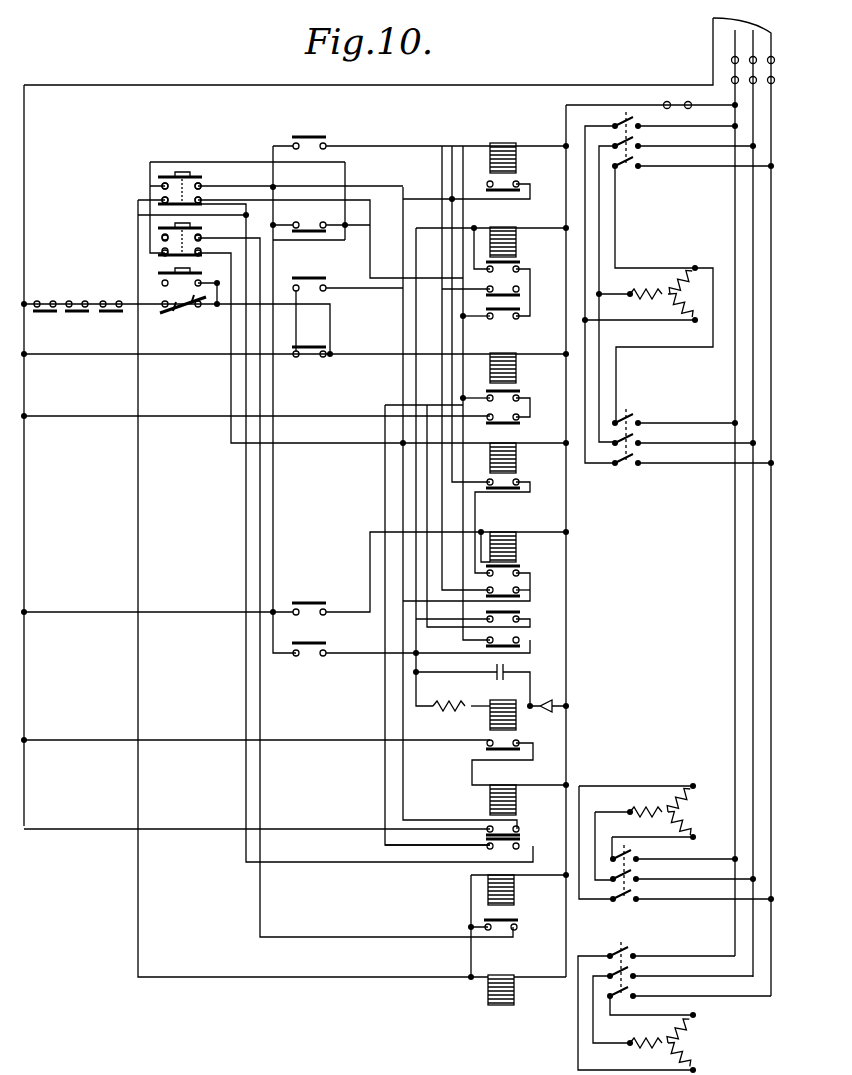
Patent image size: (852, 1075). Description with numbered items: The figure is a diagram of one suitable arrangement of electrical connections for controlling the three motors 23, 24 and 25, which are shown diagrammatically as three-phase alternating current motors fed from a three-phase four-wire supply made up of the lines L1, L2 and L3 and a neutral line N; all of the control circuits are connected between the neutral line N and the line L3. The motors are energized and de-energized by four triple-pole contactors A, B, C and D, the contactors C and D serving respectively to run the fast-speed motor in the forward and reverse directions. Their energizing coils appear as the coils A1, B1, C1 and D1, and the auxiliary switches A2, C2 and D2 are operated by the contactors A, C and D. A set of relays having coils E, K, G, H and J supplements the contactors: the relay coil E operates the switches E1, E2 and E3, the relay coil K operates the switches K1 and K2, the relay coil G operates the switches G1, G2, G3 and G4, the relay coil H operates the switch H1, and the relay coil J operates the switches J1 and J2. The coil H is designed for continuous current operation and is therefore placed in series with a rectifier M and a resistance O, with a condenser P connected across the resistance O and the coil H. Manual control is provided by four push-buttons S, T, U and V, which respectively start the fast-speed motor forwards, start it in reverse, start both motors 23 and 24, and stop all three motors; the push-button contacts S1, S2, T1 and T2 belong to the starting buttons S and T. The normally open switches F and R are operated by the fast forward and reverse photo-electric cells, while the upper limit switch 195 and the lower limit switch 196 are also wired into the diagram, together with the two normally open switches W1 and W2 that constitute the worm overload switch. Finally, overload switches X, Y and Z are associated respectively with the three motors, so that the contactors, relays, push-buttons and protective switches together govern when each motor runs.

The neutral line N is at (537, 85).
The supply line L1 is at (729, 501).
The supply line L2 is at (753, 42).
The supply line L3 is at (735, 57).
The triple-pole contactor C is at (630, 116).
The triple-pole contactor D is at (629, 416).
The triple-pole contactor A is at (691, 888).
The triple-pole contactor B is at (626, 948).
The motor 25 is at (666, 291).
The motor 23 is at (666, 805).
The motor 24 is at (684, 1038).
The upper limit switch 195 is at (315, 220).
The lower limit switch 196 is at (315, 270).
The push-button S is at (178, 176).
The switch contact S1 is at (197, 182).
The switch contact S2 is at (200, 198).
The push-button T is at (163, 236).
The switch contact T1 is at (200, 236).
The switch contact T2 is at (201, 252).
The push-button U is at (162, 283).
The push-button V is at (160, 304).
The overload switch X is at (111, 319).
The overload switch Y is at (77, 319).
The overload switch Z is at (42, 319).
The normally open switch F is at (310, 130).
The normally open switch R is at (305, 344).
The normally open switch W1 is at (306, 596).
The normally open switch W2 is at (306, 644).
The condenser P is at (497, 674).
The resistance O is at (465, 708).
The rectifier M is at (548, 693).
The energizing coil C1 is at (517, 158).
The auxiliary switch C2 is at (521, 190).
The relay coil E is at (517, 242).
The switch E1 is at (521, 263).
The switch E2 is at (521, 295).
The switch E3 is at (521, 310).
The relay coil K is at (517, 368).
The switch K1 is at (521, 392).
The switch K2 is at (521, 423).
The energizing coil D1 is at (517, 458).
The auxiliary switch D2 is at (521, 488).
The relay coil G is at (517, 547).
The switch G1 is at (521, 566).
The switch G2 is at (521, 596).
The switch G3 is at (521, 612).
The switch G4 is at (525, 651).
The relay coil H is at (517, 718).
The switch H1 is at (521, 749).
The relay coil J is at (517, 798).
The switch J1 is at (521, 825).
The switch J2 is at (521, 840).
The energizing coil A1 is at (514, 888).
The auxiliary switch A2 is at (519, 921).
The energizing coil B1 is at (514, 990).